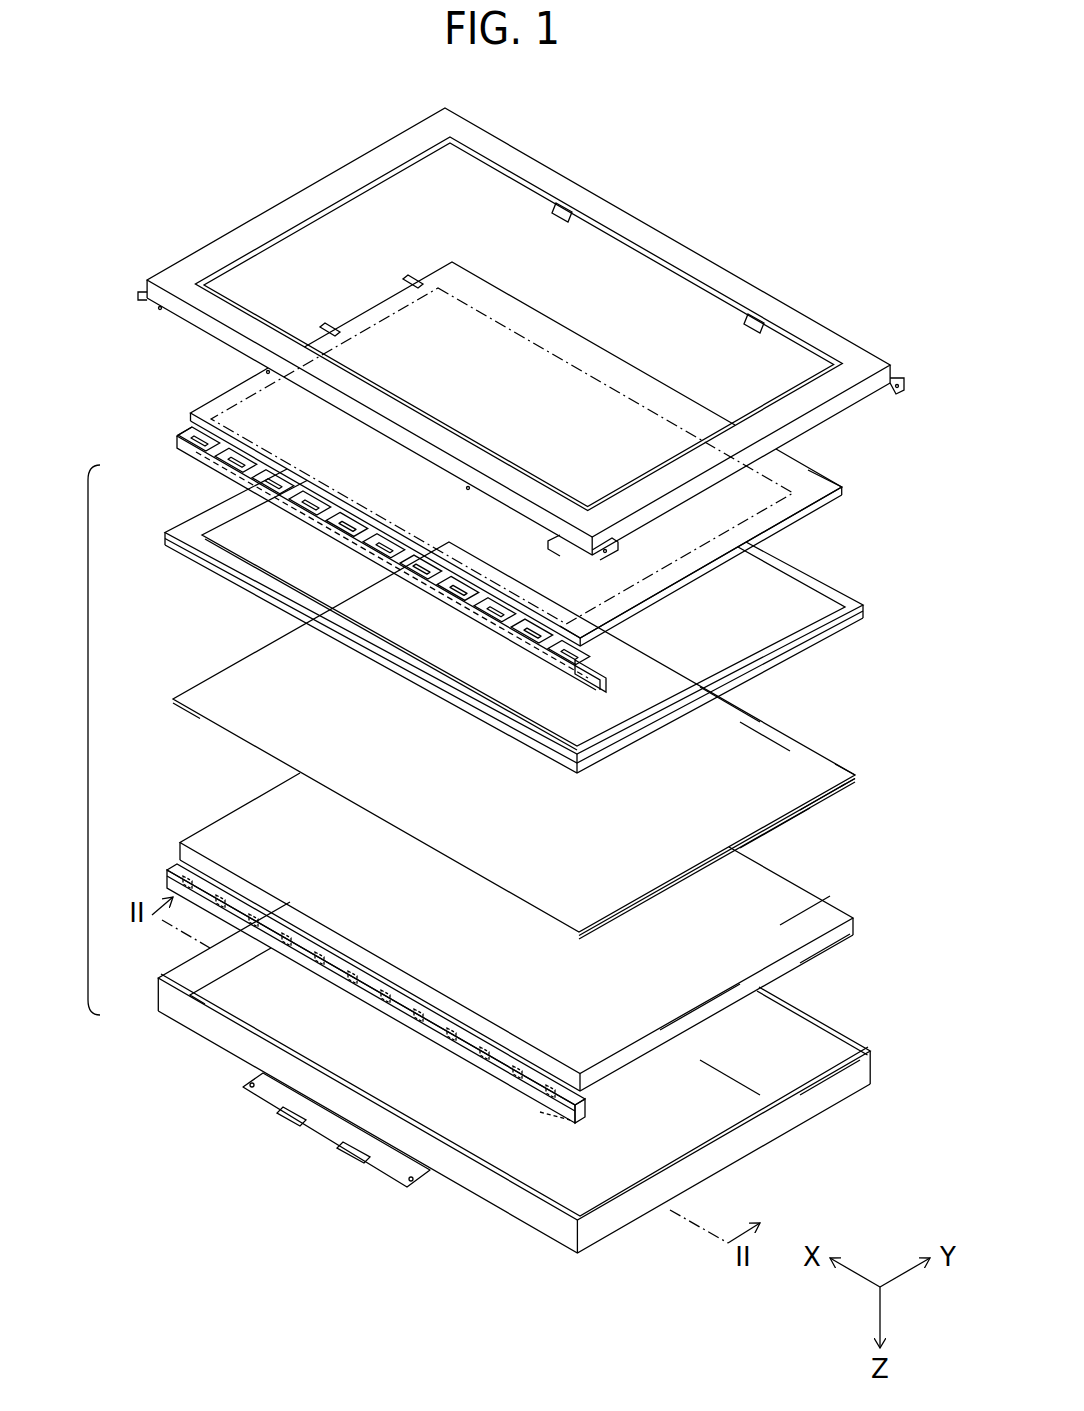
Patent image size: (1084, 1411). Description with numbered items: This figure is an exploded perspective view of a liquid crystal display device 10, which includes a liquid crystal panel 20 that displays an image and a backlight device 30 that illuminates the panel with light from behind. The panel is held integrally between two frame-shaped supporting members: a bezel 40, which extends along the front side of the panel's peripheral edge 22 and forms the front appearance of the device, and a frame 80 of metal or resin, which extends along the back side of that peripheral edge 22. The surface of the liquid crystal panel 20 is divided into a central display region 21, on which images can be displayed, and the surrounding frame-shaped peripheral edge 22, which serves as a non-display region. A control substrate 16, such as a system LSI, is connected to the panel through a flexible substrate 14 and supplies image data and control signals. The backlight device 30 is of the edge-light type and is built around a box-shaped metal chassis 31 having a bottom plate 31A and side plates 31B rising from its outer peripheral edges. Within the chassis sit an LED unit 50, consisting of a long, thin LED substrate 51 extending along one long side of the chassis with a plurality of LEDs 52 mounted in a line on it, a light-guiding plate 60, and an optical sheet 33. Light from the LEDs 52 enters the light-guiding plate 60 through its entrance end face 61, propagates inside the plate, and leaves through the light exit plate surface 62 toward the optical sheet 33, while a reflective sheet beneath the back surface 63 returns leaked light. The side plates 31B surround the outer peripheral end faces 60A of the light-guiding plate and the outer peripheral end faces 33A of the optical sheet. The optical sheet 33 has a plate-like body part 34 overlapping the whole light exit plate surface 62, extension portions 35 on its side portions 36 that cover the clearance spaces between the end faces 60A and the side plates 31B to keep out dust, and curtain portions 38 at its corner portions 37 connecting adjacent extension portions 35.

The liquid crystal display device 10 is at (815, 108).
The flexible substrate 14 is at (178, 426).
The control substrate 16 is at (185, 438).
The liquid crystal panel 20 is at (590, 387).
The display region 21 is at (760, 488).
The peripheral edge 22 is at (828, 486).
The backlight device 30 is at (88, 742).
The chassis 31 is at (160, 1000).
The bottom plate 31A is at (743, 1090).
The side plates 31B is at (852, 1080).
The optical sheet 33 is at (213, 697).
The outer peripheral end faces of the optical sheet 33A is at (785, 828).
The body part 34 is at (783, 757).
The extension portions 35 is at (825, 800).
The side portions 36 is at (755, 722).
The corner portions 37 is at (855, 775).
The curtain portions 38 is at (860, 786).
The bezel 40 is at (568, 185).
The LED unit 50 is at (170, 880).
The LED substrate 51 is at (535, 1100).
The LED 52 is at (555, 1122).
The light-guiding plate 60 is at (240, 830).
The outer peripheral end faces of the light-guiding plate 60A is at (710, 1025).
The entrance end face 61 is at (175, 868).
The light exit plate surface 62 is at (808, 912).
The back surface 63 is at (827, 955).
The frame 80 is at (178, 520).